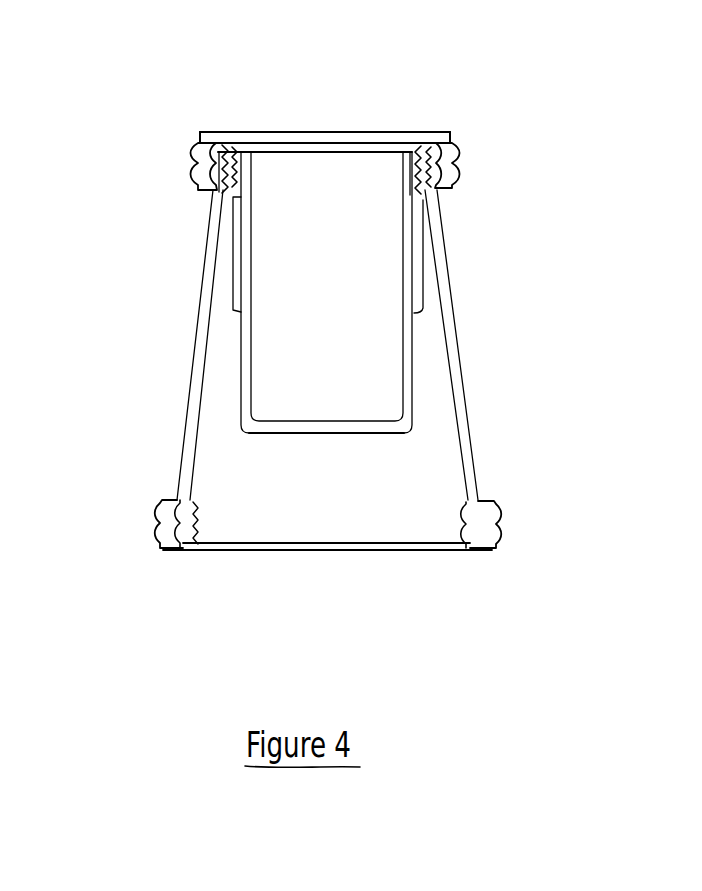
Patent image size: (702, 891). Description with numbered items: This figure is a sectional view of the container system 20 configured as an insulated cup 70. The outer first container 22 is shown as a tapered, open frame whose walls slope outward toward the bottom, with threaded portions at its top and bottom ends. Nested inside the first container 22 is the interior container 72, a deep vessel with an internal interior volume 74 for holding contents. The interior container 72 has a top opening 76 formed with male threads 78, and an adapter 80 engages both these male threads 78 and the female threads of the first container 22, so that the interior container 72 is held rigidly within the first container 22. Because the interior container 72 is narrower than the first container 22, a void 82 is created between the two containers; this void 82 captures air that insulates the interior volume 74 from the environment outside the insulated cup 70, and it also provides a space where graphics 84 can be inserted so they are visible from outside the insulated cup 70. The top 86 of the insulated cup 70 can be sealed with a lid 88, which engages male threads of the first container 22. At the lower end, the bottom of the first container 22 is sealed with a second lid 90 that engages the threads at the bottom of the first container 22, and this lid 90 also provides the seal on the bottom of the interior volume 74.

The container system 20 is at (152, 56).
The first container 22 is at (468, 392).
The insulated cup 70 is at (127, 376).
The interior container 72 is at (383, 437).
The interior volume 74 is at (358, 356).
The top opening 76 is at (380, 164).
The male threads 78 is at (247, 158).
The adapter 80 is at (223, 190).
The void 82 is at (230, 216).
The graphics 84 is at (423, 256).
The top 86 is at (450, 152).
The lid 88 is at (350, 132).
The lid 90 is at (492, 542).